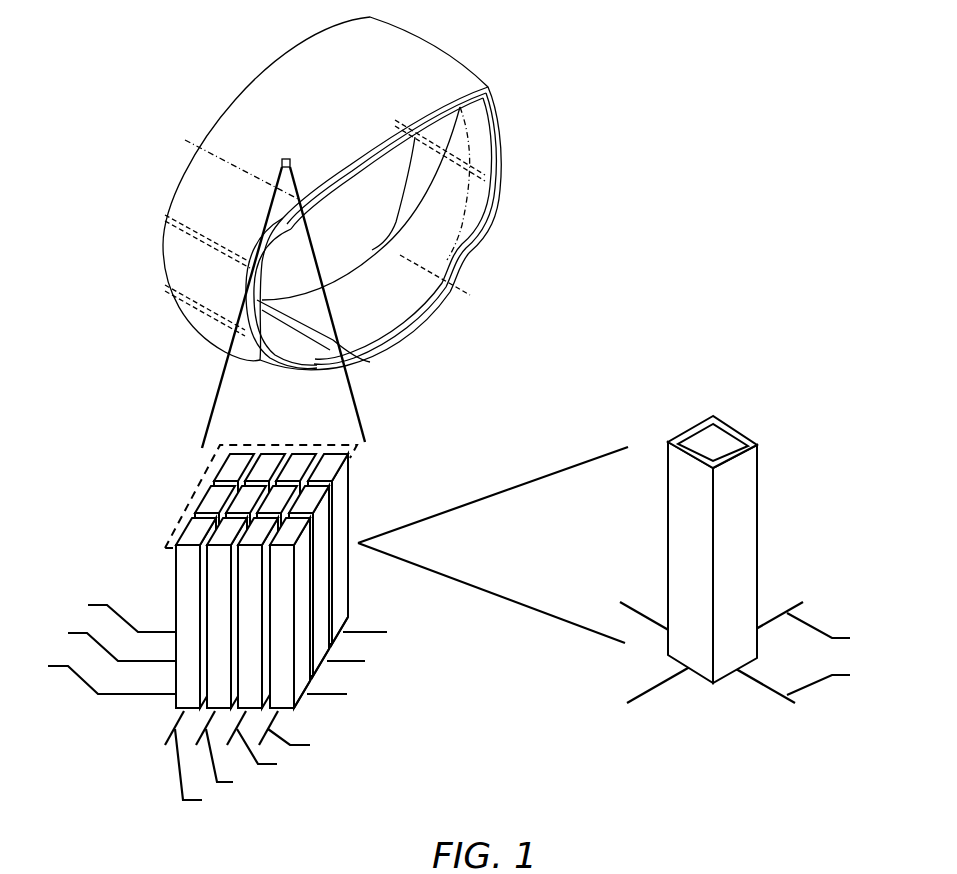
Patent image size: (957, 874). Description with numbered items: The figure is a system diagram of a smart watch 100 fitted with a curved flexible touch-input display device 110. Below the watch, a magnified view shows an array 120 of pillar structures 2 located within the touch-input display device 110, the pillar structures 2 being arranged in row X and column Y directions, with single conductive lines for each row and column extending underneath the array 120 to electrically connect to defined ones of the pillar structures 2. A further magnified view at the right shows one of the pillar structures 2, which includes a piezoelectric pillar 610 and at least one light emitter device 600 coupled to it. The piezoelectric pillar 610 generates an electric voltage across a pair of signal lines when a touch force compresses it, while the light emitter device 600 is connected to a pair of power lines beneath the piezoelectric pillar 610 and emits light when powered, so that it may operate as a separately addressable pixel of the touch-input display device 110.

The smart watch 100 is at (260, 410).
The touch-input display device 110 is at (332, 193).
The array 120 is at (203, 475).
The pillar structure 2 is at (748, 550).
The light emitter device 600 is at (727, 433).
The piezoelectric pillar 610 is at (746, 562).